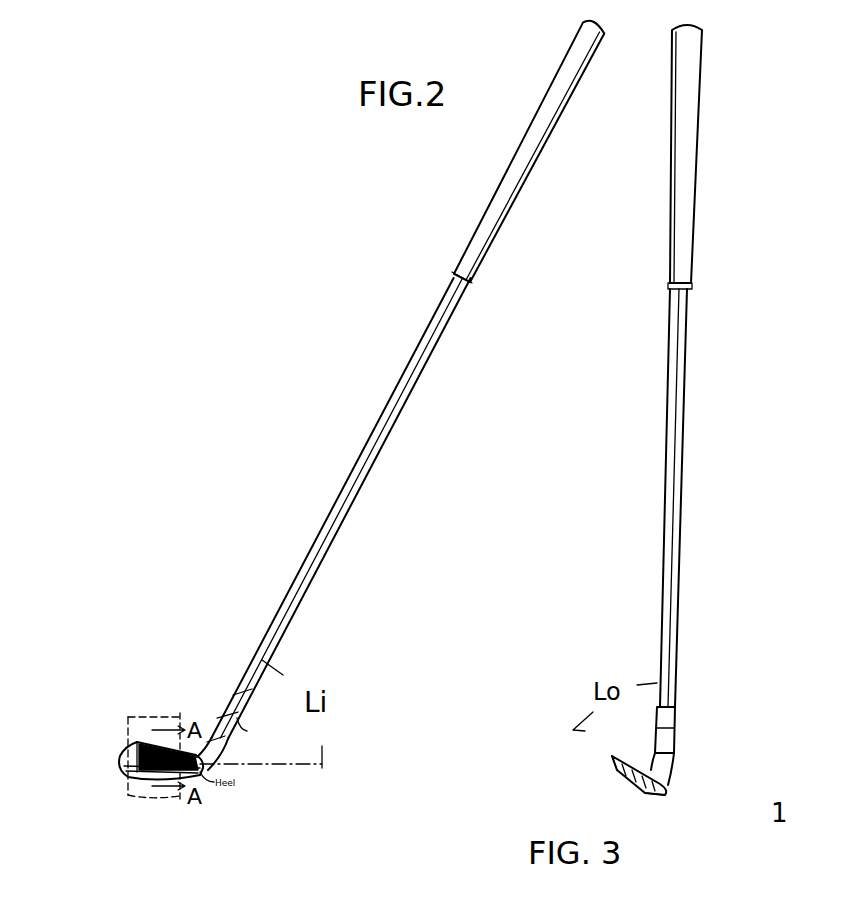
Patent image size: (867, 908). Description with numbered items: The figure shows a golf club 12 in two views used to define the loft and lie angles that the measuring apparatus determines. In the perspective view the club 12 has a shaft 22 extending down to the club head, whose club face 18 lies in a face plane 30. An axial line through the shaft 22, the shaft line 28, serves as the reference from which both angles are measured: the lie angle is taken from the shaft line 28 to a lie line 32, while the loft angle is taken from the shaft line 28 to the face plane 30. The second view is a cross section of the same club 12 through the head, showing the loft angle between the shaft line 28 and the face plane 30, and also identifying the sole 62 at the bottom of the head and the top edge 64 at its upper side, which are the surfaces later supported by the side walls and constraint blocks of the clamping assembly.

In FIG. 2, the golf club 12 is at (384, 259).
In FIG. 3, the golf club 12 is at (731, 242).
In FIG. 2, the shaft 22 is at (443, 332).
In FIG. 3, the shaft 22 is at (687, 357).
In FIG. 2, the shaft line 28 is at (358, 487).
In FIG. 3, the shaft line 28 is at (672, 528).
In FIG. 2, the face plane 30 is at (124, 737).
In FIG. 3, the face plane 30 is at (640, 773).
In FIG. 2, the club face 18 is at (120, 752).
In FIG. 2, the lie line 32 is at (305, 770).
In FIG. 3, the top edge 64 is at (600, 757).
In FIG. 3, the sole 62 is at (665, 800).